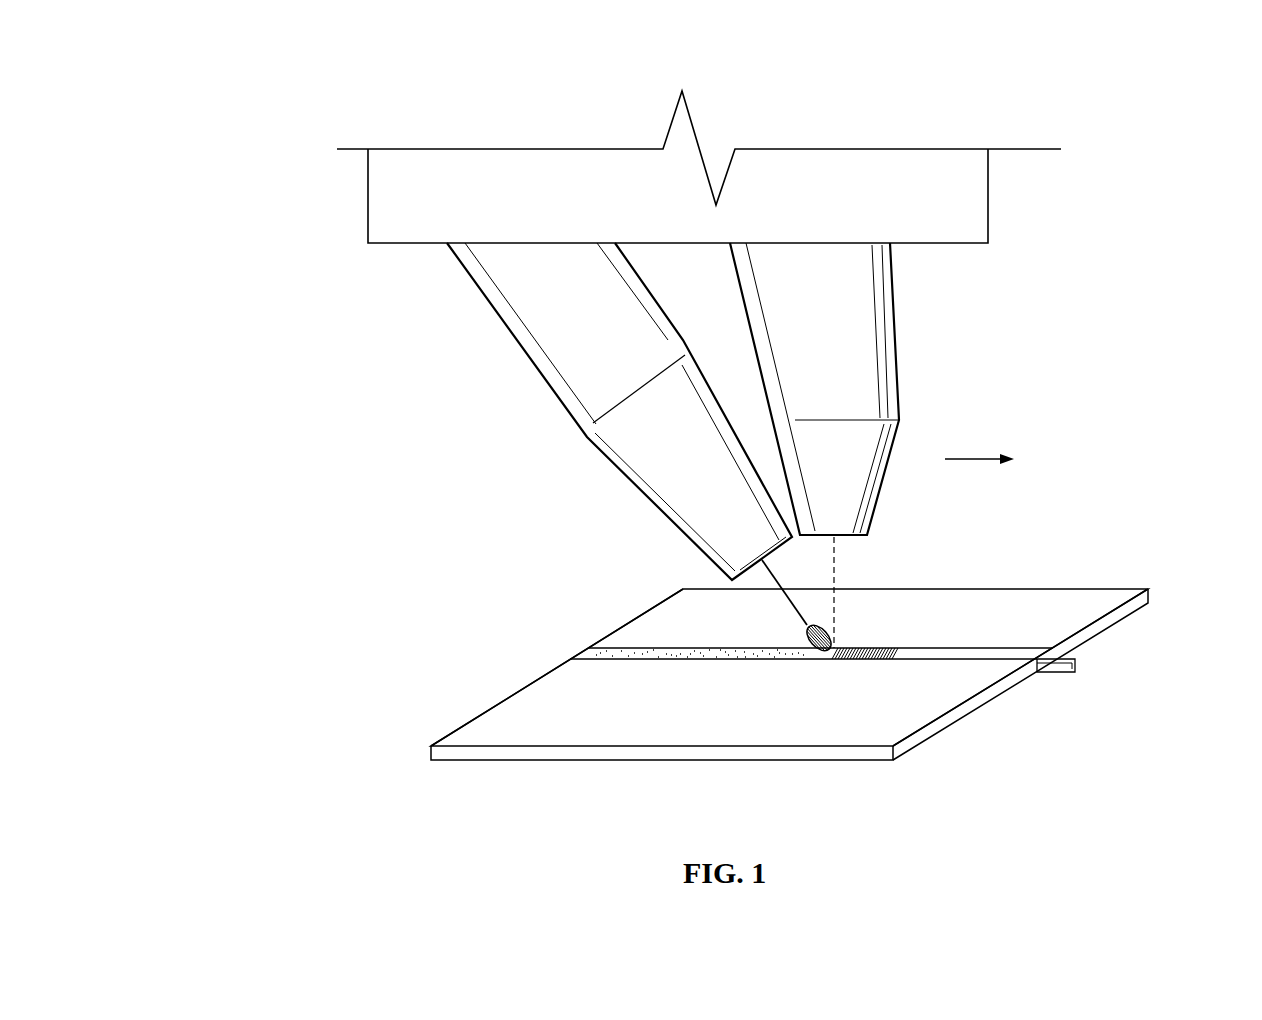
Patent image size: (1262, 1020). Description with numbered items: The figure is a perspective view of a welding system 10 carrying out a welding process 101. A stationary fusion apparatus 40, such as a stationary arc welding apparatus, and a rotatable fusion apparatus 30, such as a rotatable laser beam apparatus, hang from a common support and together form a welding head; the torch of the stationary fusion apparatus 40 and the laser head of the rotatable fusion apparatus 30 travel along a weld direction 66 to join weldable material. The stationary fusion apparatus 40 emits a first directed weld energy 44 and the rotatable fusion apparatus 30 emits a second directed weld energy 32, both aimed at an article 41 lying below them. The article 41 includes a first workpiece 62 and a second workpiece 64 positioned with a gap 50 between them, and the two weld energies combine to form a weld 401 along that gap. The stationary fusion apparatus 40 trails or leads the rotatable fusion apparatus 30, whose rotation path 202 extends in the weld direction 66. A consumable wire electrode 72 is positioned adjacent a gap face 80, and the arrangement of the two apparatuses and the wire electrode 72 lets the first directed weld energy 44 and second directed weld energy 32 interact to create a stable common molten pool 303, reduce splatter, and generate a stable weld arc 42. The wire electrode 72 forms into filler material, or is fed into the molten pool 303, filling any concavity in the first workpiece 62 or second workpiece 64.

The welding system 10 is at (1108, 96).
The welding process 101 is at (270, 296).
The stationary fusion apparatus 40 is at (598, 370).
The rotatable fusion apparatus 30 is at (811, 373).
The second directed weld energy 32 is at (835, 563).
The first directed weld energy 44 is at (805, 618).
The weld direction 66 is at (973, 460).
The article 41 is at (412, 742).
The second workpiece 64 is at (507, 730).
The first workpiece 62 is at (1115, 600).
The weld arc 42 is at (757, 630).
The weld 401 is at (610, 652).
The gap face 80 is at (972, 648).
The gap 50 is at (1028, 648).
The rotation path 202 is at (917, 657).
The common molten pool 303 is at (823, 658).
The wire electrode 72 is at (1073, 652).